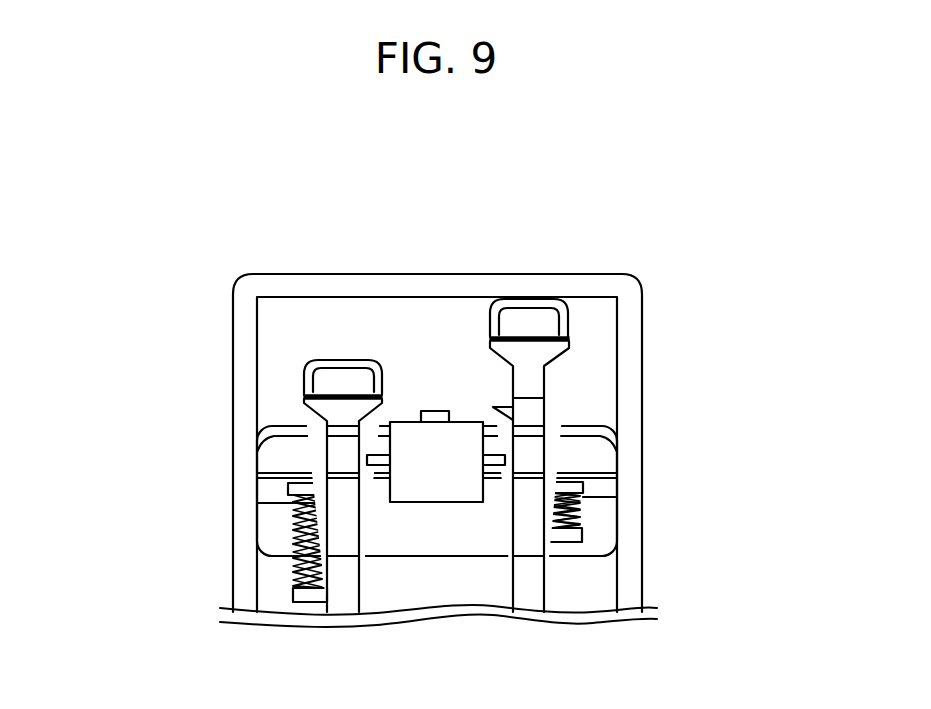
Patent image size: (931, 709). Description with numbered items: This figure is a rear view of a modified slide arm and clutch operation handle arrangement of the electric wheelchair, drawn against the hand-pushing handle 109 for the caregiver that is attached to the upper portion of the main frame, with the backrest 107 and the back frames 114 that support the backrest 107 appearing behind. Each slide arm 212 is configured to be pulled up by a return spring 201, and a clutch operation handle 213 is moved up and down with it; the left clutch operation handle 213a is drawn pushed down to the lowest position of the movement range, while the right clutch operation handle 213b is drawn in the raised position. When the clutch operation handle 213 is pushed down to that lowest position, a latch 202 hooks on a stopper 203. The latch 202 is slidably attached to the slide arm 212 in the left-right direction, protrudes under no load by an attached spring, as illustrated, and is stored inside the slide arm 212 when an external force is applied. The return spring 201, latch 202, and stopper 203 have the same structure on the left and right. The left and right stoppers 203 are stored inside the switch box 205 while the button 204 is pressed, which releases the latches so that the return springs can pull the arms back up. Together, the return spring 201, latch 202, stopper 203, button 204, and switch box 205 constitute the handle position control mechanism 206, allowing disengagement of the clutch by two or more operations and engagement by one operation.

The hand-pushing handle 109 is at (573, 285).
The backrest 107 is at (573, 448).
The return spring 201 is at (278, 553).
The latch 202 is at (375, 472).
The stopper 203 is at (377, 462).
The button 204 is at (421, 331).
The switch box 205 is at (410, 445).
The handle position control mechanism 206 is at (427, 396).
The slide arm 212 is at (343, 540).
The back frames 114 is at (600, 488).
The clutch operation handle 213 is at (421, 396).
The left clutch operation handle 213a is at (345, 360).
The right clutch operation handle 213b is at (528, 299).